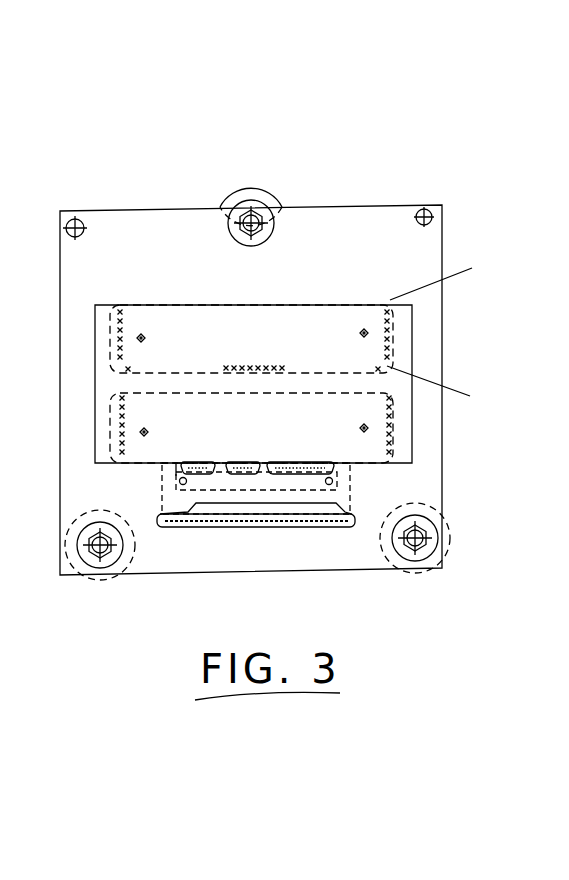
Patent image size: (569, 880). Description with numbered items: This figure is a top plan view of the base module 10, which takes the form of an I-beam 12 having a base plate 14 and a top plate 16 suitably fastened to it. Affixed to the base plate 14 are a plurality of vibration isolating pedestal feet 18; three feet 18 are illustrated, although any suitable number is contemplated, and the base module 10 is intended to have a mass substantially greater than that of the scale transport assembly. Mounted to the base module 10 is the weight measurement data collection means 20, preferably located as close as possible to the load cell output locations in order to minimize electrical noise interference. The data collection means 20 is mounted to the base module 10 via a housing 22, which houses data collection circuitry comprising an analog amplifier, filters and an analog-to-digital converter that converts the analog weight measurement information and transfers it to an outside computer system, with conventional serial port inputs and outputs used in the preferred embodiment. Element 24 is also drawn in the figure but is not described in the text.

The base module 10 is at (338, 168).
The I-beam 12 is at (400, 350).
The base plate 14 is at (413, 260).
The top plate 16 is at (270, 330).
The vibration isolating pedestal feet 18 is at (243, 184).
The weight measurement data collection means 20 is at (352, 475).
The housing 22 is at (160, 504).
The connector 24 is at (180, 474).